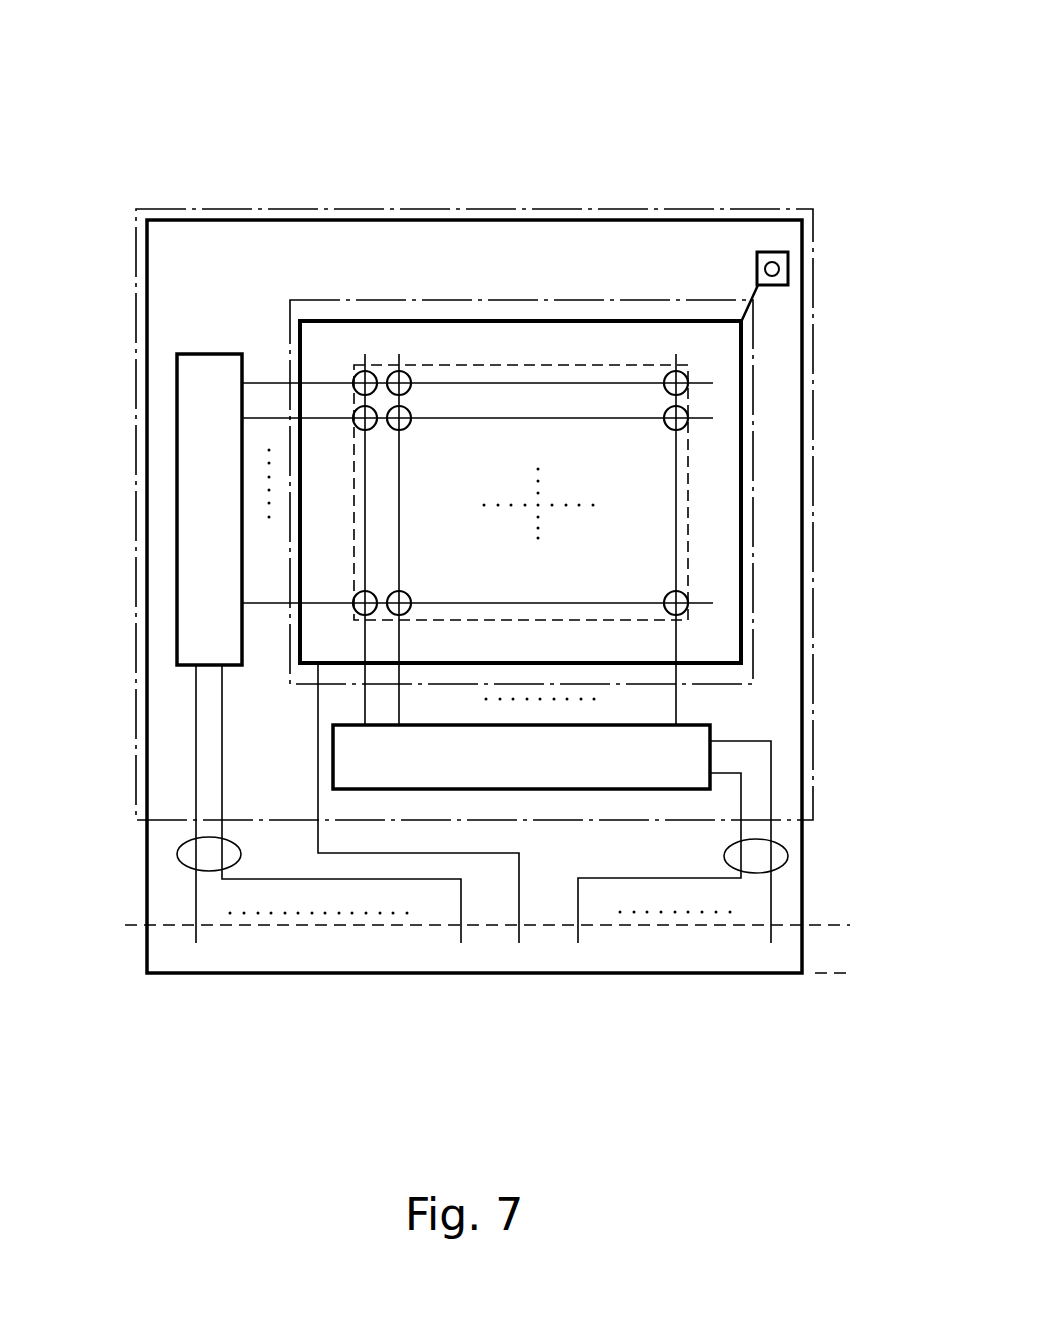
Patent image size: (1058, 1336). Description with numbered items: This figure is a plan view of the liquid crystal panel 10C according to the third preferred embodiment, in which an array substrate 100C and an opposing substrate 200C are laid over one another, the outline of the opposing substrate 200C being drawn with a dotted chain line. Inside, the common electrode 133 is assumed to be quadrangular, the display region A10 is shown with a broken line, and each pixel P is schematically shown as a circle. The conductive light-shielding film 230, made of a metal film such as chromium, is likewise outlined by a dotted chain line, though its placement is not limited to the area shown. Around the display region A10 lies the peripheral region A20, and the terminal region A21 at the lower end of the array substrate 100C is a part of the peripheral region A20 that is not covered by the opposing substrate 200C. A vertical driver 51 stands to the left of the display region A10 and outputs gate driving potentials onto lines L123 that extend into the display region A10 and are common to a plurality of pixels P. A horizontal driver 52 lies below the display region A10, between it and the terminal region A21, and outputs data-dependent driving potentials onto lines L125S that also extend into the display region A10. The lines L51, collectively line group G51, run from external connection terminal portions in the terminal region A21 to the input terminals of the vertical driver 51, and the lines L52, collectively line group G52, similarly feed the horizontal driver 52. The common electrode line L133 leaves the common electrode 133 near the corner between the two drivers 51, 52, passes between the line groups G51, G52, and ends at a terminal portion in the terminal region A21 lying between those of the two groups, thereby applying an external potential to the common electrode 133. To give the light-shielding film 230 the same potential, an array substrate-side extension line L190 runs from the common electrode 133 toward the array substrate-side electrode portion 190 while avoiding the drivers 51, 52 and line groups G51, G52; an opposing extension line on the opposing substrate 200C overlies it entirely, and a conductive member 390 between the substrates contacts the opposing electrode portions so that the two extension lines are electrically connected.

The liquid crystal panel 10C is at (174, 186).
The opposing substrate 200C is at (257, 210).
The array substrate 100C is at (371, 247).
The light-shielding film 230 is at (753, 383).
The common electrode 133 is at (723, 448).
The display region A10 is at (692, 511).
The peripheral region A20 is at (782, 569).
The terminal region A21 is at (823, 925).
The vertical driver 51 is at (175, 435).
The horizontal driver 52 is at (613, 790).
The line L123 is at (273, 383).
The line L125S is at (677, 705).
The pixel P is at (672, 372).
The conductive member 390 is at (787, 273).
The array substrate-side electrode portion 190 is at (772, 252).
The array substrate-side extension line L190 is at (750, 292).
The line L51 is at (196, 830).
The line group G51 is at (182, 868).
The common electrode line L133 is at (519, 897).
The line L52 is at (771, 830).
The line group G52 is at (780, 868).